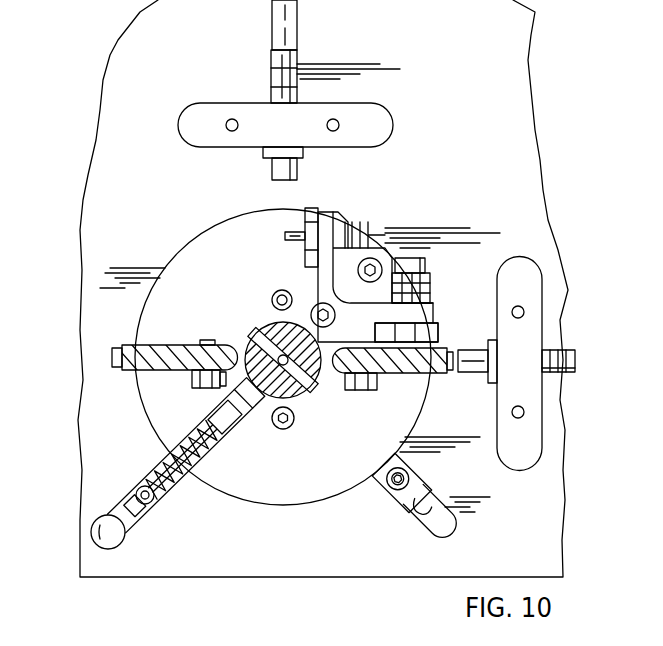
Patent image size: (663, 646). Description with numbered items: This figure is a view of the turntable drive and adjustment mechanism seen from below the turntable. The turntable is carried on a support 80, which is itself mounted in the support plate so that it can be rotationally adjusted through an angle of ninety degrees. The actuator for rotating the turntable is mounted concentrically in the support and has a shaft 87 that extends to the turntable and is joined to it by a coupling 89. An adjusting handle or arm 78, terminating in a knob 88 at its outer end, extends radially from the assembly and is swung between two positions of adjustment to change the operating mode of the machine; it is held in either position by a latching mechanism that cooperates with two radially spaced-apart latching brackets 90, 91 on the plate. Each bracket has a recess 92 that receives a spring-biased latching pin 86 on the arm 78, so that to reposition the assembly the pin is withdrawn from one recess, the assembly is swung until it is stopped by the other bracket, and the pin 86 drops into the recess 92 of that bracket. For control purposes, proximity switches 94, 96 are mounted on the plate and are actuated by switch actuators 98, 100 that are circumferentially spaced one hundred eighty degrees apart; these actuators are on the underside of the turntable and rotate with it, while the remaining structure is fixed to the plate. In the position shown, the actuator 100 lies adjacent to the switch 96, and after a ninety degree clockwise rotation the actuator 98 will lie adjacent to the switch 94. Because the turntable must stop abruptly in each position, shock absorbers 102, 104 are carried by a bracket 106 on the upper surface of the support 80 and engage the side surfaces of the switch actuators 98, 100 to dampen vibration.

The adjusting handle 78 is at (165, 506).
The support 80 is at (200, 248).
The spring-biased latching pin 86 is at (138, 480).
The shaft 87 is at (252, 344).
The ball knob 88 is at (125, 526).
The coupling 89 is at (296, 418).
The latching bracket 90 is at (152, 462).
The latching bracket 91 is at (417, 470).
The recess 92 is at (413, 508).
The proximity switch 94 is at (263, 162).
The proximity switch 96 is at (475, 373).
The switch actuator 98 is at (172, 343).
The switch actuator 100 is at (413, 373).
The shock absorber 102 is at (283, 238).
The shock absorber 104 is at (437, 340).
The bracket 106 is at (307, 288).